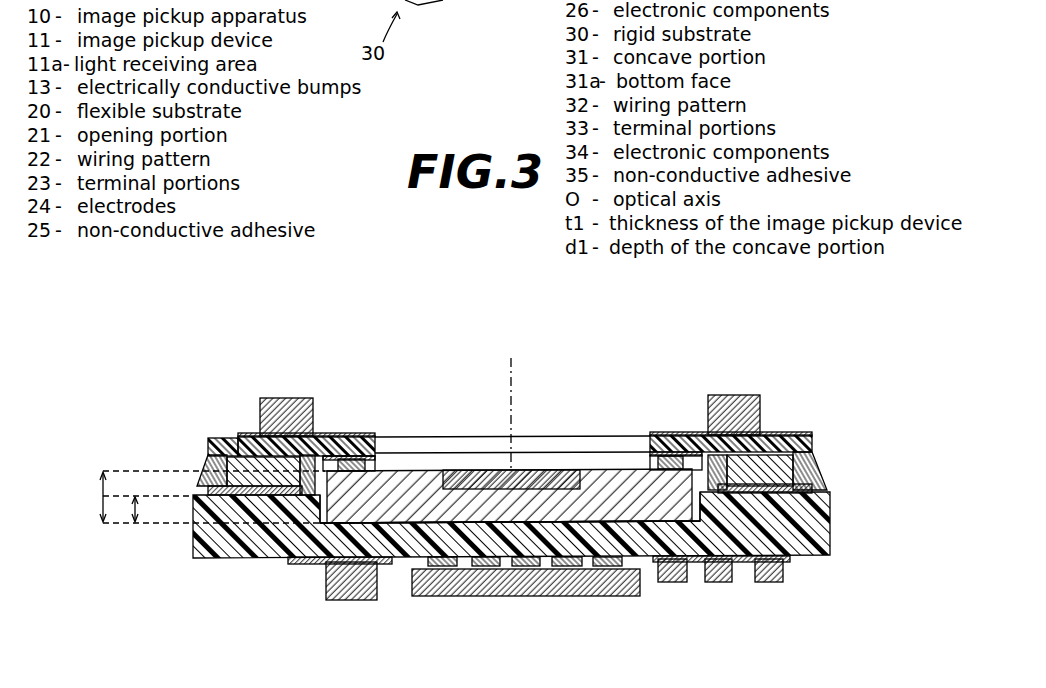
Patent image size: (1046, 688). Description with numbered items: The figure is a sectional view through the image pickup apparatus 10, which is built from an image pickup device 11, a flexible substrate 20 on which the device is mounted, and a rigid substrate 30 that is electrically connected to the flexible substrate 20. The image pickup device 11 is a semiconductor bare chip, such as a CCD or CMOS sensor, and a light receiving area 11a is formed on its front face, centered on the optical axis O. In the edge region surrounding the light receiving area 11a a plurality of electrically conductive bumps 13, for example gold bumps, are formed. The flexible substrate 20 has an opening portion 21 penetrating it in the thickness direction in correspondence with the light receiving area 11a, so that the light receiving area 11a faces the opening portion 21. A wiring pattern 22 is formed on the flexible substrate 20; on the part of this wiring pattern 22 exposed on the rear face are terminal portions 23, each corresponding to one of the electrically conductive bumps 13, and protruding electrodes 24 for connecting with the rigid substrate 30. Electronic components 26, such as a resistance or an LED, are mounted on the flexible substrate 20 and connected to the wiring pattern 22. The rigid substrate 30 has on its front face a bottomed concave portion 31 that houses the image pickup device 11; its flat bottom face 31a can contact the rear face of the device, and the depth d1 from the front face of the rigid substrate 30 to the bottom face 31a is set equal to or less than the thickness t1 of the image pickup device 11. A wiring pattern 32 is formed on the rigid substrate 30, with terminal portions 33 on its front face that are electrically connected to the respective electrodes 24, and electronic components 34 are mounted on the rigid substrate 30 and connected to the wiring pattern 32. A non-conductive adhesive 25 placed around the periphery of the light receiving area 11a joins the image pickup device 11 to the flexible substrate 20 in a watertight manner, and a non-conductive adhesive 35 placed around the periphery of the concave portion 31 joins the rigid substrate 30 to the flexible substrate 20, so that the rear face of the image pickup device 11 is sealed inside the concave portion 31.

The image pickup apparatus 10 is at (659, 326).
The image pickup device 11 is at (436, 466).
The light receiving area 11a is at (476, 470).
The electrically conductive bumps 13 is at (349, 458).
The flexible substrate 20 is at (370, 432).
The opening portion 21 is at (641, 446).
The wiring pattern 22 is at (328, 434).
The terminal portions 23 is at (378, 463).
The electrodes 24 is at (250, 473).
The non-conductive adhesive 25 is at (375, 468).
The electronic components 26 is at (283, 398).
The rigid substrate 30 is at (253, 571).
The concave portion 31 is at (689, 518).
The bottom face 31a is at (636, 522).
The wiring pattern 32 is at (393, 566).
The terminal portions 33 is at (247, 489).
The electronic components 34 is at (352, 600).
The non-conductive adhesive 35 is at (208, 455).
The optical axis O is at (512, 401).
The thickness of the image pickup device t1 is at (213, 497).
The depth of the concave portion d1 is at (148, 509).